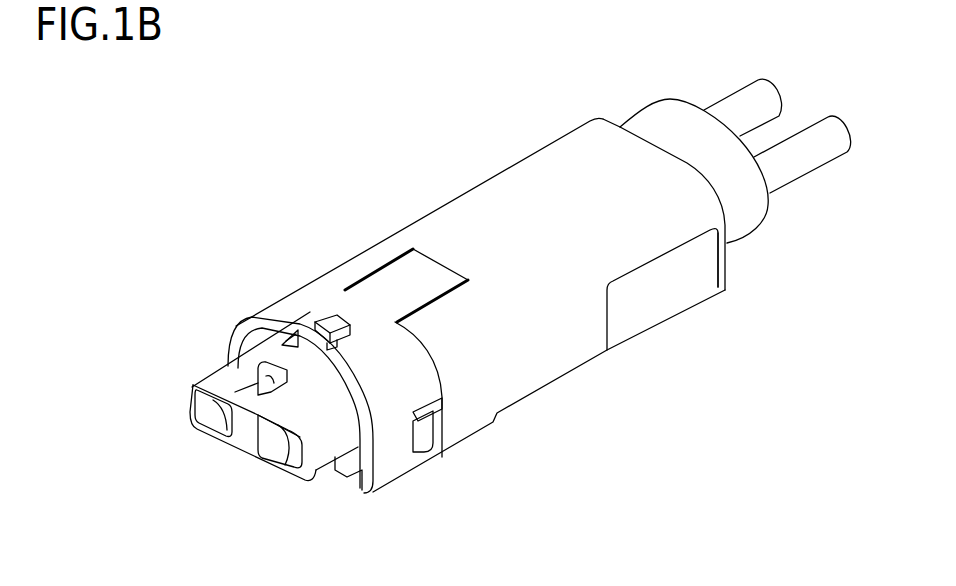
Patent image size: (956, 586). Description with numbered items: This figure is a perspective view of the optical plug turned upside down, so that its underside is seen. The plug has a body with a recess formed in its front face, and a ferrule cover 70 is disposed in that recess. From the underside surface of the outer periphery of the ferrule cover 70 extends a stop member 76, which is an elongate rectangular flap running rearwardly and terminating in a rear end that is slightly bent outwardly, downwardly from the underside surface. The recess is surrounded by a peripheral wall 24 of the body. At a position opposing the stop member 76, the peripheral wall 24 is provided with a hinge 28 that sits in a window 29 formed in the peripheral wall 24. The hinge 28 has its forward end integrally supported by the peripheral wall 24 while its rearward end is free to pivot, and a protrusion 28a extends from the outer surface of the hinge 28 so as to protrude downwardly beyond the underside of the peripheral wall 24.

The peripheral wall 24 is at (303, 297).
The hinge 28 is at (323, 323).
The protrusion 28a is at (262, 316).
The window 29 is at (340, 323).
The ferrule cover 70 is at (315, 462).
The stop member 76 is at (280, 372).